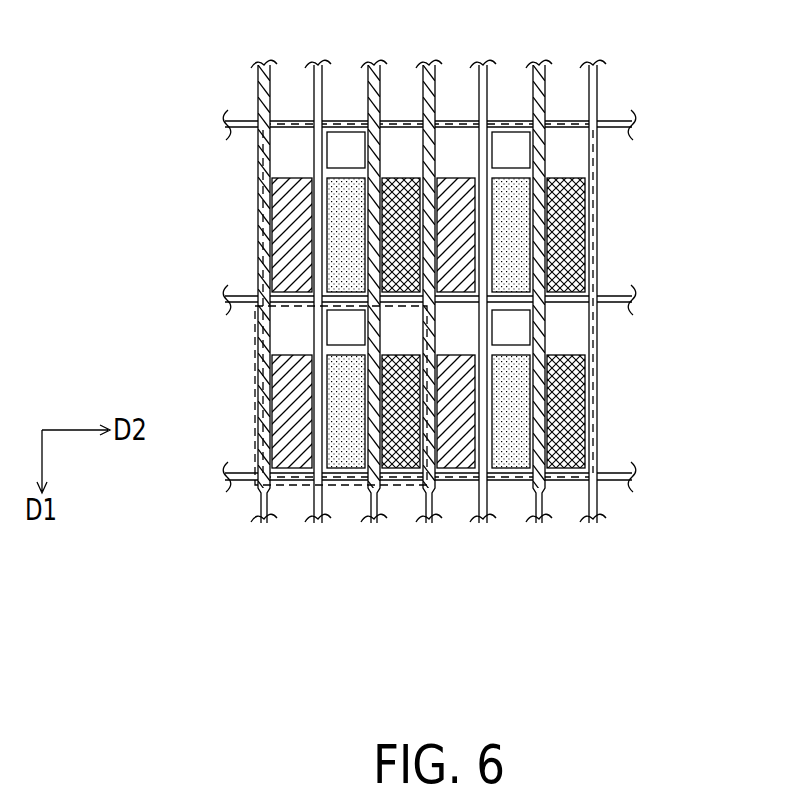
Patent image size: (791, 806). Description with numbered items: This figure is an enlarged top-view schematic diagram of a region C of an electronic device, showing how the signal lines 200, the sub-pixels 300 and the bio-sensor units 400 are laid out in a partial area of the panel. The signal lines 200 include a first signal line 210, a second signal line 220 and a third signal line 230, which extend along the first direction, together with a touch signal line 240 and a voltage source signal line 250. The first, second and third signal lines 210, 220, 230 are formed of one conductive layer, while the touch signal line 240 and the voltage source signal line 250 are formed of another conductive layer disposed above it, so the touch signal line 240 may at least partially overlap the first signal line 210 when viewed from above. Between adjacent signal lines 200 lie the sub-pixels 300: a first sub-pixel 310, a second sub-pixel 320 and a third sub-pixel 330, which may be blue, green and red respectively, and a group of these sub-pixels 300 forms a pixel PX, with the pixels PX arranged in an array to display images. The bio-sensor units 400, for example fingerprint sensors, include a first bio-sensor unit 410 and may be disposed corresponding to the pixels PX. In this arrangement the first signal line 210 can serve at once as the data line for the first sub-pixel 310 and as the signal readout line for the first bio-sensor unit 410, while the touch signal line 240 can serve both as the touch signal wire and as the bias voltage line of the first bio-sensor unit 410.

The signal lines 200 is at (608, 298).
The first signal line 210 is at (373, 513).
The second signal line 220 is at (318, 513).
The third signal line 230 is at (260, 510).
The touch signal line 240 is at (372, 67).
The voltage source signal line 250 is at (262, 67).
The sub-pixels 300 is at (402, 403).
The first sub-pixel 310 is at (400, 462).
The second sub-pixel 320 is at (345, 460).
The third sub-pixel 330 is at (293, 462).
The bio-sensor units 400 is at (306, 242).
The first bio-sensor unit 410 is at (340, 322).
The pixel PX is at (253, 368).
The region C is at (573, 123).